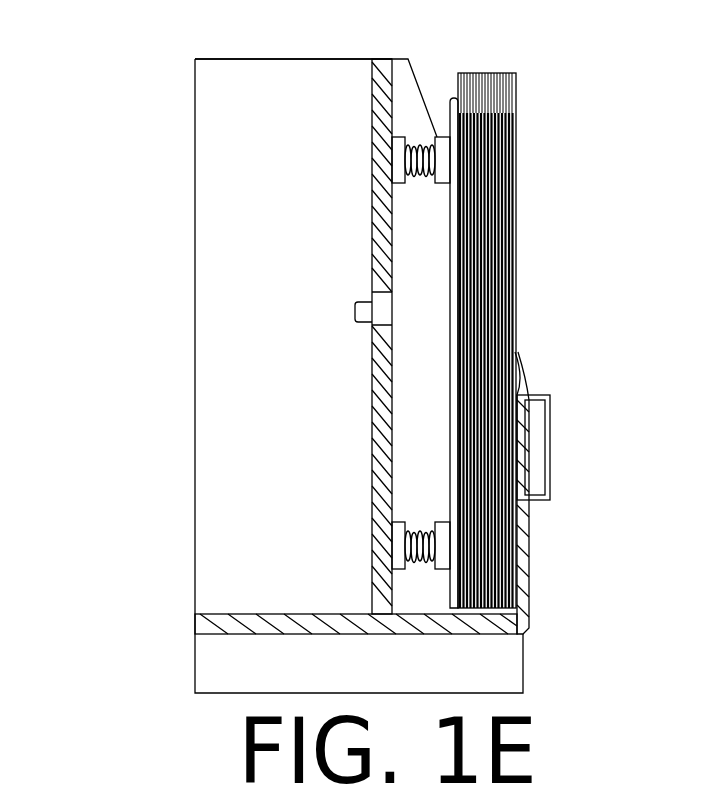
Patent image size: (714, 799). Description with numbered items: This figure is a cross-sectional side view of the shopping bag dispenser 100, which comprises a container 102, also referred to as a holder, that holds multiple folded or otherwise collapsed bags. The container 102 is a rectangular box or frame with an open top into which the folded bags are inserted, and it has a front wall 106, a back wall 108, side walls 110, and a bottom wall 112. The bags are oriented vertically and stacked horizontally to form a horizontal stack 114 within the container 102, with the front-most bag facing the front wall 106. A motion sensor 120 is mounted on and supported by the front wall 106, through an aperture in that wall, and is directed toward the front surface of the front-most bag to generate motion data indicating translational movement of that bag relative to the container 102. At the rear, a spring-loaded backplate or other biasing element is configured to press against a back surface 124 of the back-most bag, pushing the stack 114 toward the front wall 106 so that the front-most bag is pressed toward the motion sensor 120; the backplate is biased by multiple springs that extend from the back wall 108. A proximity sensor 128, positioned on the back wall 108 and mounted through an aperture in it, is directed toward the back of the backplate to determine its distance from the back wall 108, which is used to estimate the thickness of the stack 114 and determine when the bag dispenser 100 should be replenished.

The bag dispenser 100 is at (110, 29).
The container 102 is at (195, 190).
The front wall 106 is at (522, 556).
The back wall 108 is at (385, 105).
The side walls 110 is at (210, 100).
The bottom wall 112 is at (205, 624).
The horizontal stack 114 is at (512, 138).
The motion sensor 120 is at (535, 468).
The back surface 124 is at (452, 213).
The proximity sensor 128 is at (357, 305).